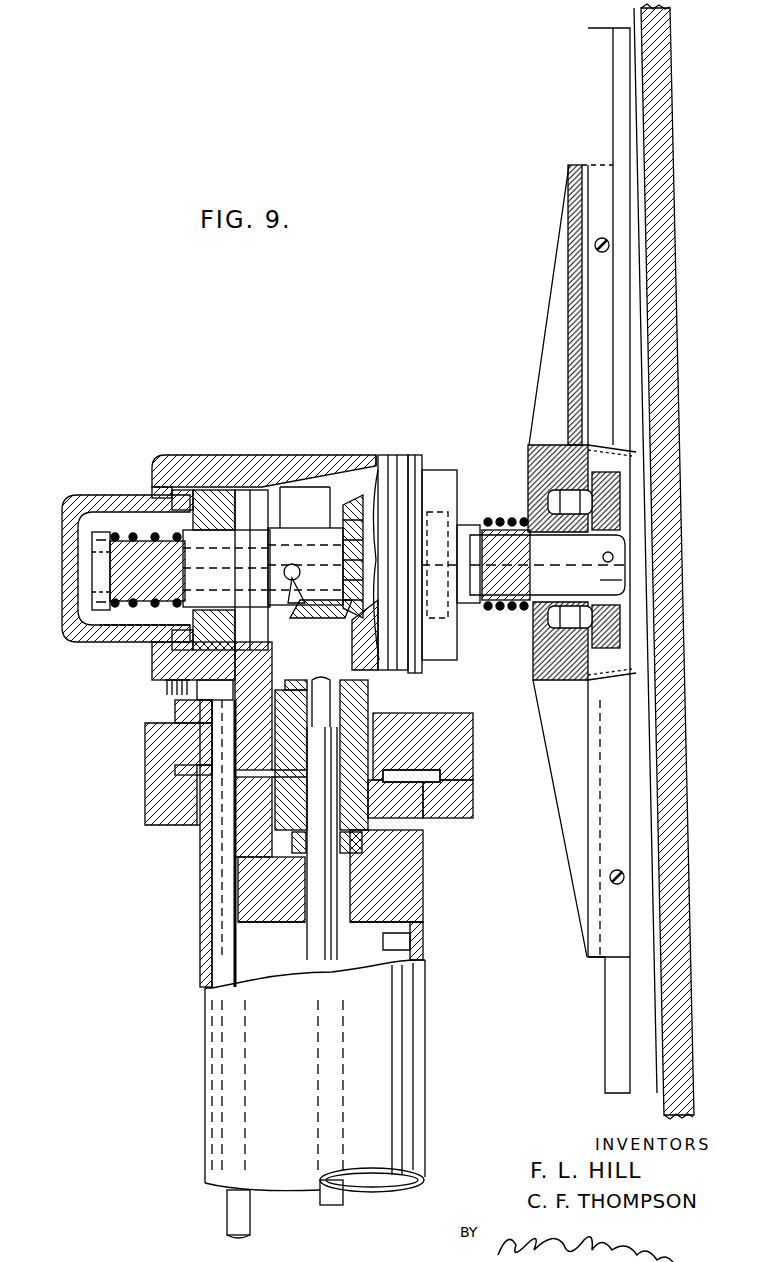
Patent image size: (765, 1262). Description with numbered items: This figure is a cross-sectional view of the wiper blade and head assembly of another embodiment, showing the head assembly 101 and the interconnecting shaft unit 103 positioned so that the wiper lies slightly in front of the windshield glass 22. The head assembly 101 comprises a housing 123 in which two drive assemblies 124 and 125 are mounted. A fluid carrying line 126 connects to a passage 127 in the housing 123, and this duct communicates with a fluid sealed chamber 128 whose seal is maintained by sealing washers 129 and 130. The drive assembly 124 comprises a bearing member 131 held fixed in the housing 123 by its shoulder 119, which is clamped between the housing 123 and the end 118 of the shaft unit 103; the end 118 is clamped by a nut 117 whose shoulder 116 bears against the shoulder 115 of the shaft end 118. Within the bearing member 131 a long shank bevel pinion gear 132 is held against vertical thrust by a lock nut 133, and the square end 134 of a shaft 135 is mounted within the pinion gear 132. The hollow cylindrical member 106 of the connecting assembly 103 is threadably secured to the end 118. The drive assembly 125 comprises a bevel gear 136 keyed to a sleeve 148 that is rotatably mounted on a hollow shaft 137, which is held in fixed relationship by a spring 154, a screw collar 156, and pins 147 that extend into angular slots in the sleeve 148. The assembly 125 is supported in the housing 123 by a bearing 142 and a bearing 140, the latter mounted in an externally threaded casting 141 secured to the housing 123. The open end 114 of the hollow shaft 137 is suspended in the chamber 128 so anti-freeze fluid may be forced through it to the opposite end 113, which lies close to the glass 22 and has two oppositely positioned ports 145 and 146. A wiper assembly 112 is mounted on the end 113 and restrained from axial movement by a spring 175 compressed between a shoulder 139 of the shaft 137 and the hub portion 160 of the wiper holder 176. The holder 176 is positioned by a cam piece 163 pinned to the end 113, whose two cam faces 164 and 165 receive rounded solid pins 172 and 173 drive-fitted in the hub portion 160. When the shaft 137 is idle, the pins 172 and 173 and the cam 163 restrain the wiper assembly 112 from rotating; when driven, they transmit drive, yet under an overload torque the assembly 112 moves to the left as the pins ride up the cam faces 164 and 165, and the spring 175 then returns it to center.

The windshield glass 22 is at (672, 89).
The head assembly 101 is at (141, 416).
The shaft unit 103 is at (184, 1113).
The hollow cylindrical member 106 is at (425, 1076).
The wiper assembly 112 is at (525, 405).
The end of the shaft 113 is at (562, 590).
The open end of the hollow shaft 114 is at (90, 576).
The shoulder of the shaft end 115 is at (173, 767).
The shoulder of the nut 116 is at (193, 832).
The nut 117 is at (150, 790).
The end of the shaft unit 118 is at (413, 907).
The shoulder of the bearing member 119 is at (432, 780).
The housing 123 is at (262, 490).
The drive assembly 124 is at (414, 830).
The drive assembly 125 is at (343, 493).
The fluid carrying line 126 is at (206, 955).
The passage 127 is at (190, 700).
The fluid sealed chamber 128 is at (130, 638).
The sealing washer 129 is at (195, 458).
The sealing washer 130 is at (202, 492).
The bearing member 131 is at (370, 717).
The long shank bevel pinion gear 132 is at (392, 669).
The lock nut 133 is at (292, 845).
The square end of the shaft 134 is at (420, 722).
The shaft 135 is at (410, 946).
The bevel gear 136 is at (379, 483).
The hollow shaft 137 is at (143, 517).
The shoulder of the shaft 139 is at (469, 622).
The bearing 140 is at (427, 508).
The externally threaded casting 141 is at (411, 455).
The bearing 142 is at (221, 490).
The port 145 is at (626, 537).
The port 146 is at (626, 578).
The pin 147 is at (300, 553).
The sleeve 148 is at (310, 510).
The spring 154 is at (110, 521).
The screw collar 156 is at (91, 554).
The hub portion 160 is at (529, 467).
The cam piece 163 is at (619, 480).
The cam face 164 is at (621, 512).
The cam face 165 is at (621, 627).
The solid pin 172 is at (546, 490).
The solid pin 173 is at (560, 638).
The spring 175 is at (511, 520).
The wiper holder 176 is at (569, 849).